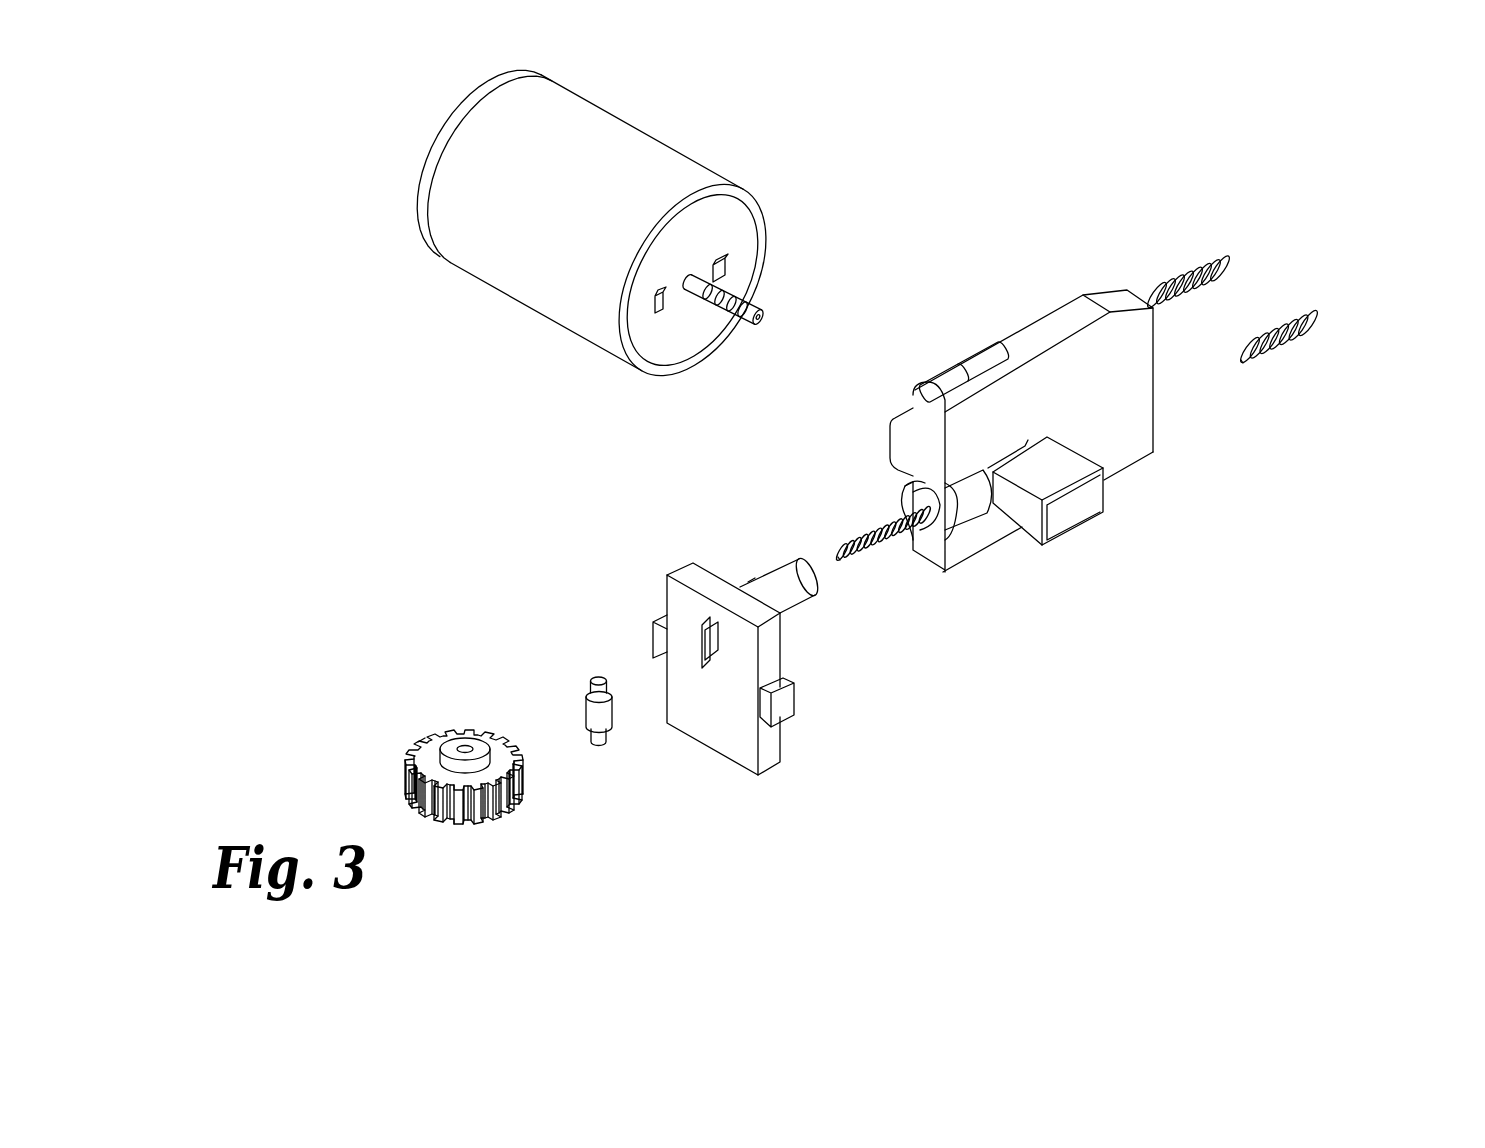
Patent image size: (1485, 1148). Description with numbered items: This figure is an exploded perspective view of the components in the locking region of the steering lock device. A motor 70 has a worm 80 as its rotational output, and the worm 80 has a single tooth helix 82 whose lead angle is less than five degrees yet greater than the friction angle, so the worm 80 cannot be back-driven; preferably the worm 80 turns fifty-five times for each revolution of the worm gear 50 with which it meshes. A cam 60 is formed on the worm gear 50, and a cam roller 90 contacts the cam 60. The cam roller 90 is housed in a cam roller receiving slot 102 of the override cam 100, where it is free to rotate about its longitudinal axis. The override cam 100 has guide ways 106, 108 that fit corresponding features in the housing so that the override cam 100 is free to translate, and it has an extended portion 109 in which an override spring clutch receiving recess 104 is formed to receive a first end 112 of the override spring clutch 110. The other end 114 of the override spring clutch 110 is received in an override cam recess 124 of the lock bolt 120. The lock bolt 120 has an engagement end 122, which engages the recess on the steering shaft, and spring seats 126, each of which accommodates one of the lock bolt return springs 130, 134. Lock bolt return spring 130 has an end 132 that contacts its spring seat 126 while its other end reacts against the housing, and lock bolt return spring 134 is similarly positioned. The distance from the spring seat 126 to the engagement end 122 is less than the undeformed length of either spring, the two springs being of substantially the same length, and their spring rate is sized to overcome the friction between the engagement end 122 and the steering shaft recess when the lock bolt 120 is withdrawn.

The worm gear 50 is at (418, 742).
The cam 60 is at (467, 832).
The motor 70 is at (532, 312).
The worm 80 is at (763, 308).
The single tooth helix 82 is at (740, 315).
The cam roller 90 is at (583, 702).
The override cam 100 is at (763, 775).
The cam roller receiving slot 102 is at (703, 663).
The override spring clutch receiving recess 104 is at (815, 584).
The guide way 106 is at (785, 694).
The guide way 108 is at (653, 617).
The extended portion 109 is at (760, 573).
The override spring clutch 110 is at (877, 527).
The first end 112 is at (837, 550).
The end 114 is at (903, 493).
The lock bolt 120 is at (1078, 293).
The engagement end 122 is at (1153, 427).
The override cam recess 124 is at (913, 550).
The spring seat 126 is at (912, 393).
The lock bolt return spring 130 is at (1317, 320).
The end 132 is at (1243, 362).
The lock bolt return spring 134 is at (1233, 258).